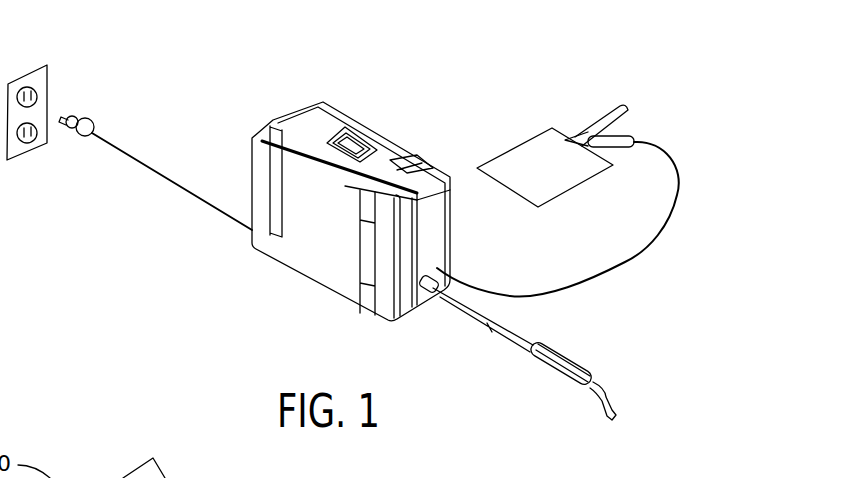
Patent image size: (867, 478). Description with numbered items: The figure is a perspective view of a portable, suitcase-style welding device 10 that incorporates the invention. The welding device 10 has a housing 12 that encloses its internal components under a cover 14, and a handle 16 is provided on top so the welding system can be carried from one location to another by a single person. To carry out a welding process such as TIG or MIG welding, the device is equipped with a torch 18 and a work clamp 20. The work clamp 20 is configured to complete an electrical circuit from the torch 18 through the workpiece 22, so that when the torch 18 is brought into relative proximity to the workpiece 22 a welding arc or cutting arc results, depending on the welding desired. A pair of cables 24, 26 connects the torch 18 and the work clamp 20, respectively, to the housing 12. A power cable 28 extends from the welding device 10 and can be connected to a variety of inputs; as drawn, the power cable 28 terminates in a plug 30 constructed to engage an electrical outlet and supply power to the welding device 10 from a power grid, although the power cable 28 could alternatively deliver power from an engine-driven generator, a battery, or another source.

The welding device 10 is at (443, 108).
The housing 12 is at (387, 155).
The cover 14 is at (320, 283).
The handle 16 is at (355, 132).
The torch 18 is at (573, 348).
The work clamp 20 is at (618, 143).
The workpiece 22 is at (505, 187).
The cable 24 is at (507, 340).
The cable 26 is at (676, 200).
The power cable 28 is at (187, 188).
The plug 30 is at (84, 114).